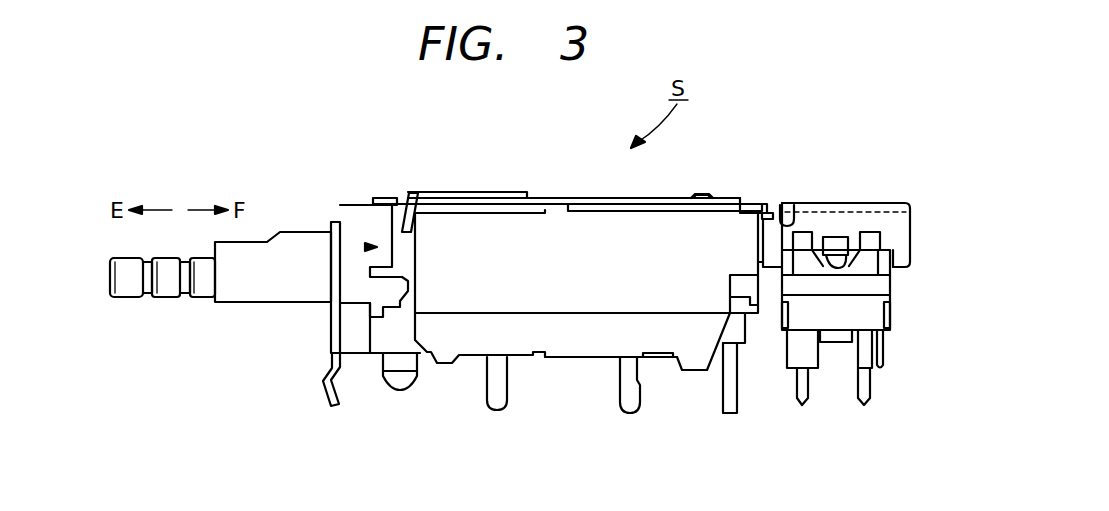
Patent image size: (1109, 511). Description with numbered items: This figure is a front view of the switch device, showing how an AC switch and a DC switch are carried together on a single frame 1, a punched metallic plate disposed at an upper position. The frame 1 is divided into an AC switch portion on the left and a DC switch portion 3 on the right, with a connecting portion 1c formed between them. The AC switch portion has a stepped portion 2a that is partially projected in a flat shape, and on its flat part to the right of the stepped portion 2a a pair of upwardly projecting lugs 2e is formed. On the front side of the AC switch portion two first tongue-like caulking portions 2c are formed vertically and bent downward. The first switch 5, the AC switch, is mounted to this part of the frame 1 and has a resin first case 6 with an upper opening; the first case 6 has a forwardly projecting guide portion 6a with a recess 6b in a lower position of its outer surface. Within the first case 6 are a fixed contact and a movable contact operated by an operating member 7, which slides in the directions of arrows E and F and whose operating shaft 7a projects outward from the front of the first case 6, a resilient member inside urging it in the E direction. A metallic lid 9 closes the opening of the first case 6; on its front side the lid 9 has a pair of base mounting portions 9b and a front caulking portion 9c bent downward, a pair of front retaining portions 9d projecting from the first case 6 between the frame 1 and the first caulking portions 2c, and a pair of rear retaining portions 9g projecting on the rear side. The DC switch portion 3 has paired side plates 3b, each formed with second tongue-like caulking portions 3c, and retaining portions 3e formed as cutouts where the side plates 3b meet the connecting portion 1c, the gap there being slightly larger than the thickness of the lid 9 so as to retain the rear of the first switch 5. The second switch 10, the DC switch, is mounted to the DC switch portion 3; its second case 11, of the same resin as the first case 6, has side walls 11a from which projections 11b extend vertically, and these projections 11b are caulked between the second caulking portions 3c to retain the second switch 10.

The frame 1 is at (558, 186).
The connecting portion 1c is at (757, 200).
The stepped portion 2a is at (436, 192).
The first tongue-like caulking portions 2c is at (388, 220).
The upwardly projecting lugs 2e is at (702, 193).
The DC switch portion 3 is at (832, 190).
The side plates 3b is at (885, 222).
The second tongue-like caulking portions 3c is at (822, 262).
The retaining portions 3e is at (790, 218).
The first switch 5 is at (566, 370).
The first case 6 is at (493, 288).
The guide portion 6a is at (353, 317).
The recess 6b is at (392, 360).
The operating member 7 is at (250, 285).
The operating shaft 7a is at (160, 300).
The lid 9 is at (470, 190).
The base mounting portions 9b is at (323, 385).
The front caulking portion 9c is at (392, 292).
The front retaining portions 9d is at (394, 198).
The rear retaining portions 9g is at (764, 212).
The second switch 10 is at (840, 360).
The second case 11 is at (892, 340).
The side walls 11a is at (872, 268).
The projections 11b is at (838, 236).